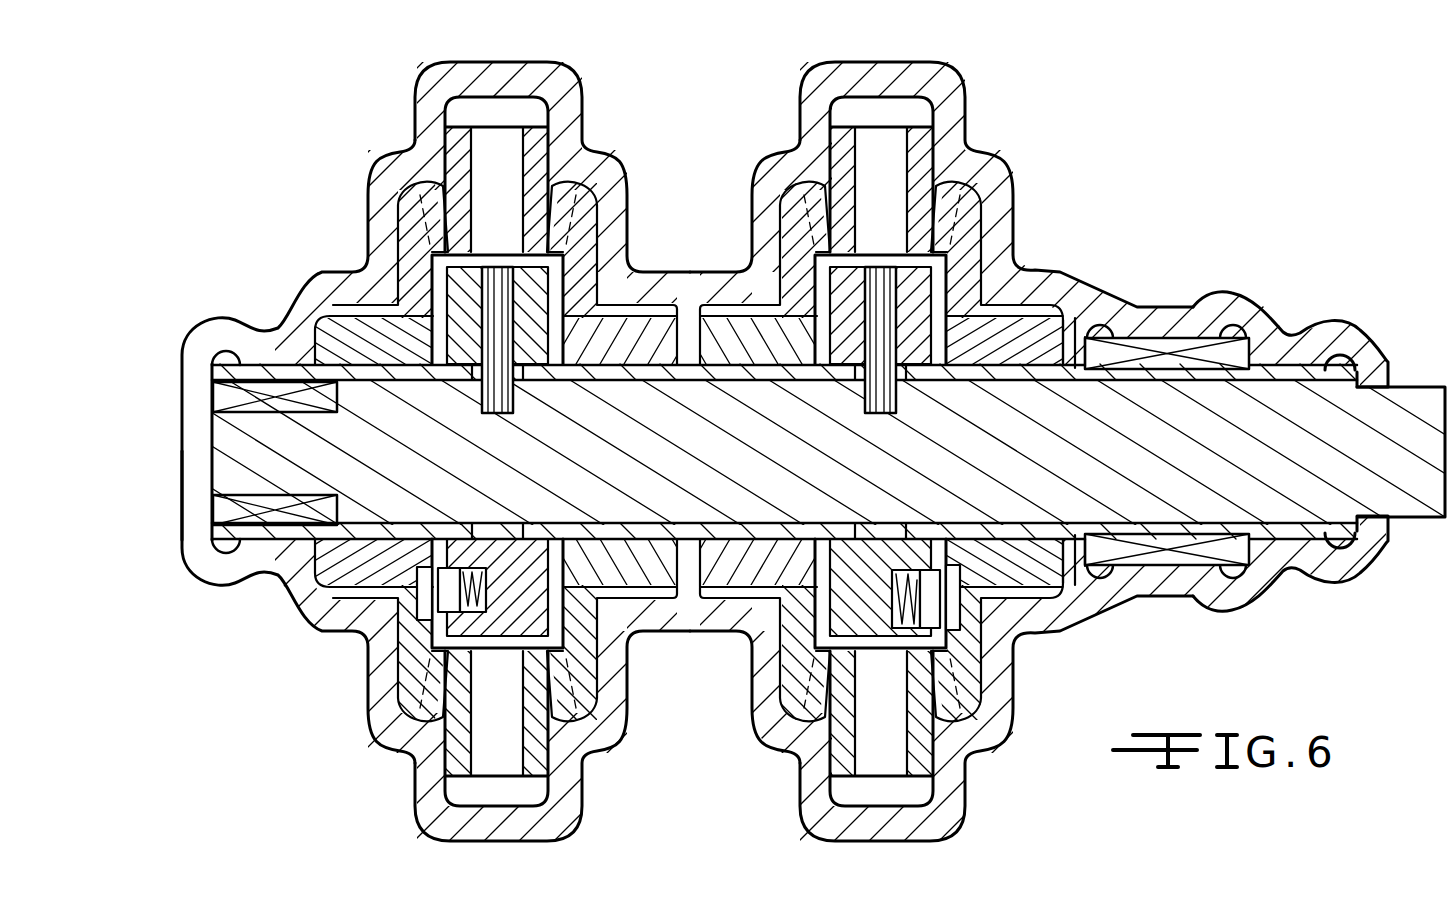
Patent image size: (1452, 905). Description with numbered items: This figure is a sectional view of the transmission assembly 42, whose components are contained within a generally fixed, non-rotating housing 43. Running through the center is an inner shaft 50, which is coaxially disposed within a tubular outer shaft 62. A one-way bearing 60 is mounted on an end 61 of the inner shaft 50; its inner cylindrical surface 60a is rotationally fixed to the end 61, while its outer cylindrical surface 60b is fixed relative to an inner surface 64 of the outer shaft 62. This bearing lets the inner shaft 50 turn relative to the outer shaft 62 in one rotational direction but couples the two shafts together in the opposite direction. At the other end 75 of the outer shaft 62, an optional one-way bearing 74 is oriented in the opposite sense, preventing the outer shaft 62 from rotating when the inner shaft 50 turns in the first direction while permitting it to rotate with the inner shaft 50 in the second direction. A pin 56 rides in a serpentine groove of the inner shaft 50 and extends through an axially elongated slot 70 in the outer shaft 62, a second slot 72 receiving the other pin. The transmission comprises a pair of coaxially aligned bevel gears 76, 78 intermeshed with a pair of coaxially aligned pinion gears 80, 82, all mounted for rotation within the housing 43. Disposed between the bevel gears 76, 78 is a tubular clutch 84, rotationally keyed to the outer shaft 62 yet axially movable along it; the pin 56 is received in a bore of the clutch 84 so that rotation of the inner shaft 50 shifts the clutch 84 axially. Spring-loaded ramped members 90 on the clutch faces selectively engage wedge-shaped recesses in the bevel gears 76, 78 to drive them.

The transmission assembly 42 is at (1146, 137).
The housing 43 is at (963, 790).
The inner shaft 50 is at (207, 437).
The pin 56 is at (523, 327).
The one-way bearing 60 is at (275, 360).
The inner cylindrical surface 60a is at (192, 385).
The outer cylindrical surface 60b is at (290, 283).
The end of the inner shaft 61 is at (240, 500).
The outer shaft 62 is at (1075, 340).
The inner surface of the outer shaft end 64 is at (272, 578).
The slot 70 is at (473, 372).
The slot 72 is at (903, 388).
The one-way bearing 74 is at (1155, 345).
The end of the outer shaft 75 is at (1277, 365).
The bevel gear 76 is at (392, 652).
The bevel gear 78 is at (636, 300).
The pinion gear 80 is at (547, 767).
The pinion gear 82 is at (588, 100).
The clutch 84 is at (510, 623).
The ramped member 90 is at (447, 330).